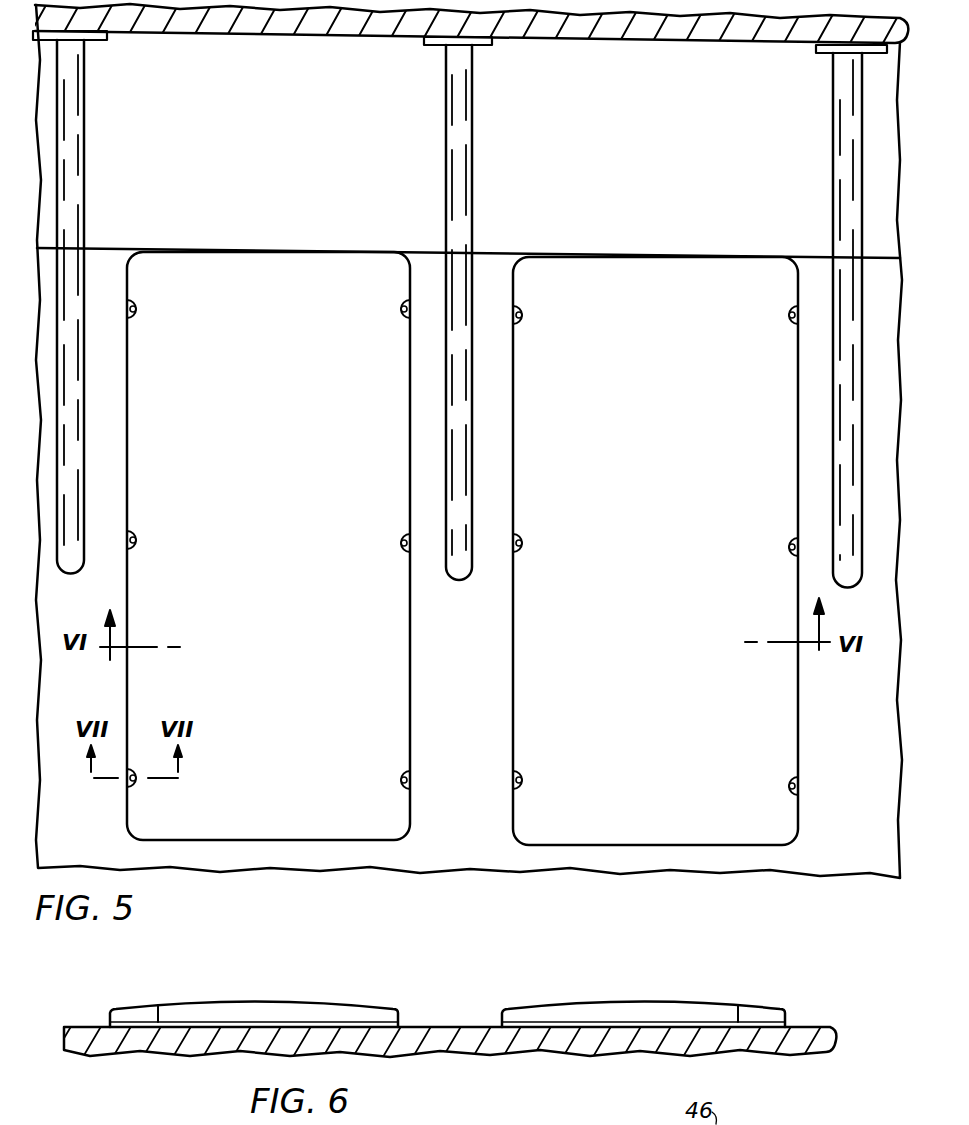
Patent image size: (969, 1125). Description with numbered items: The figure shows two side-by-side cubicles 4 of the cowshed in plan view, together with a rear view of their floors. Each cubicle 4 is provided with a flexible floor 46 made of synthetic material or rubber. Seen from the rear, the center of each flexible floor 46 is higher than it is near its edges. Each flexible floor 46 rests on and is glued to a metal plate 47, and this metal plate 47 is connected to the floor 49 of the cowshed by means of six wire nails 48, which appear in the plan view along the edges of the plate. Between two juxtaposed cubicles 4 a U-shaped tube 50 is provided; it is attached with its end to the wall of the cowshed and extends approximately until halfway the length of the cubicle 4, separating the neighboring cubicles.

In FIG. 5, the cubicle 4 is at (258, 140).
In FIG. 5, the flexible floor 46 is at (250, 262).
In FIG. 6, the flexible floor 46 is at (226, 999).
In FIG. 5, the metal plate 47 is at (125, 547).
In FIG. 6, the metal plate 47 is at (168, 986).
In FIG. 5, the wire nail 48 is at (140, 536).
In FIG. 5, the floor 49 is at (338, 856).
In FIG. 6, the floor 49 is at (462, 1036).
In FIG. 5, the U-shaped tube 50 is at (78, 173).